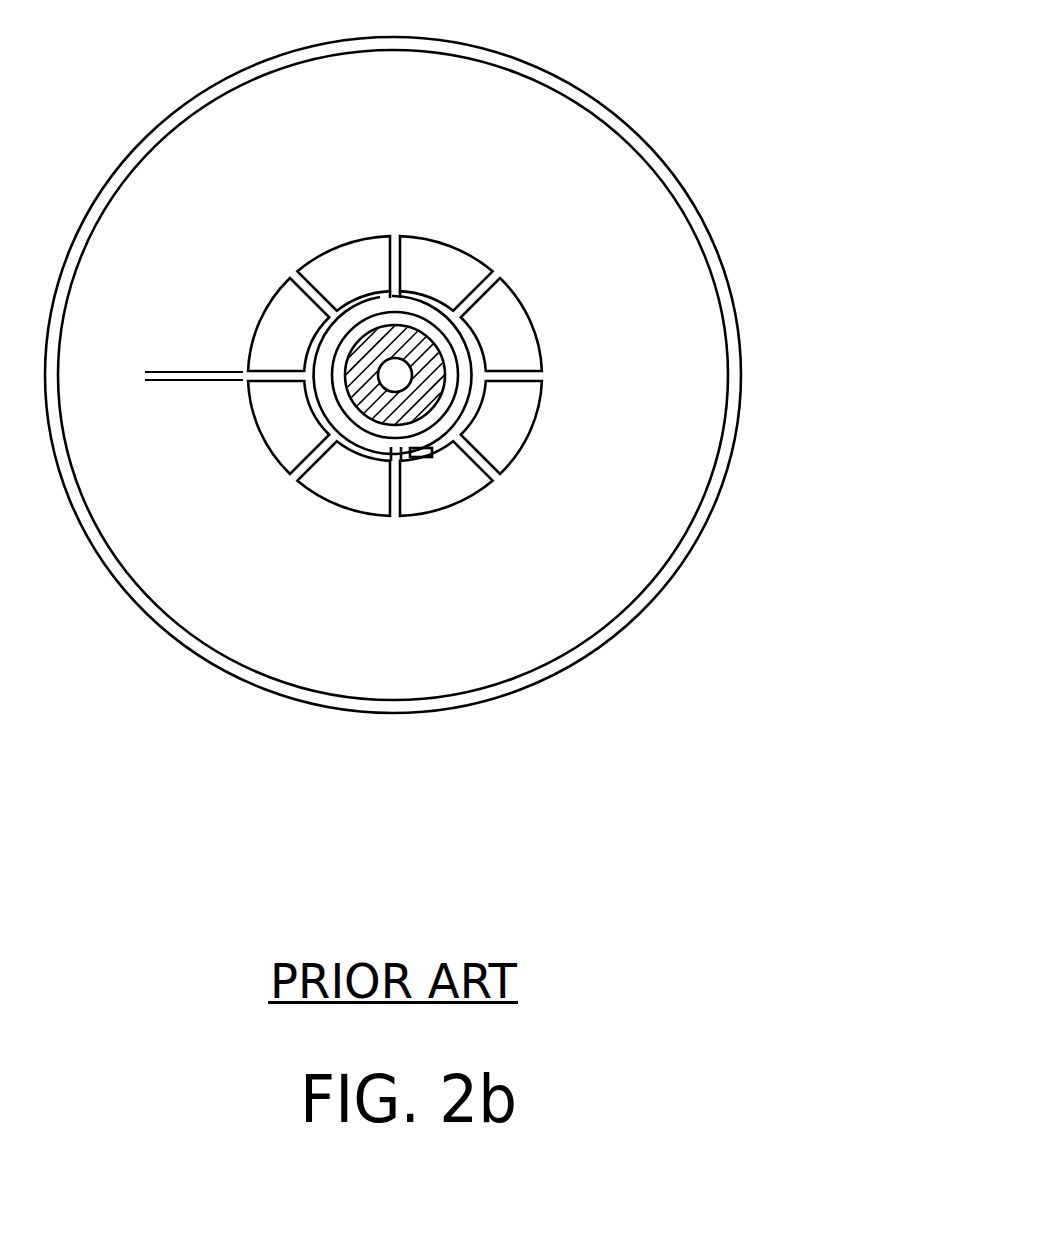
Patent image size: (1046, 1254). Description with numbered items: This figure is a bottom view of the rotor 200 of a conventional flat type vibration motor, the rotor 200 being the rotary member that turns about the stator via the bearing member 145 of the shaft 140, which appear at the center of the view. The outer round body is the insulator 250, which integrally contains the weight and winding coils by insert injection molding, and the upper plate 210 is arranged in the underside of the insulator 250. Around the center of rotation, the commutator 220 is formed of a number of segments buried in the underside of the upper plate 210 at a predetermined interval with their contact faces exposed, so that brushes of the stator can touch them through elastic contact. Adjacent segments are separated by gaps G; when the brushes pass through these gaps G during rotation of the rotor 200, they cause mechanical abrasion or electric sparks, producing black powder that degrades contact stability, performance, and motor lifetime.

The rotor assembly 200 is at (680, 115).
The insulator 250 is at (722, 292).
The upper plate 210 is at (660, 420).
The commutator 220 is at (460, 477).
The shaft 140 is at (432, 392).
The bearing member 145 is at (400, 382).
The gaps of the segments G is at (158, 453).